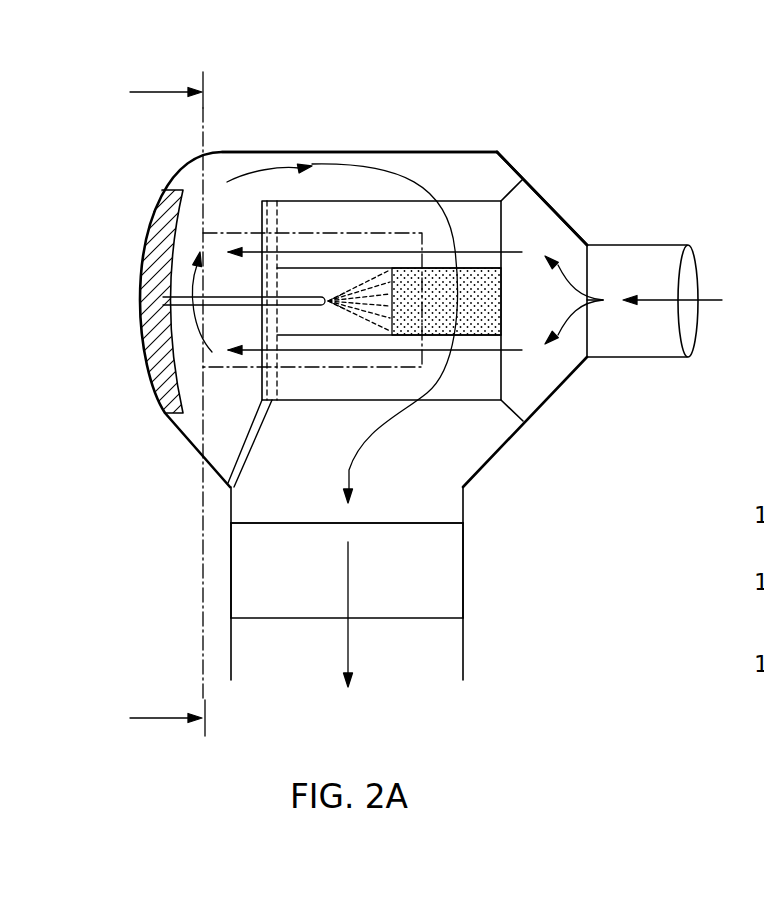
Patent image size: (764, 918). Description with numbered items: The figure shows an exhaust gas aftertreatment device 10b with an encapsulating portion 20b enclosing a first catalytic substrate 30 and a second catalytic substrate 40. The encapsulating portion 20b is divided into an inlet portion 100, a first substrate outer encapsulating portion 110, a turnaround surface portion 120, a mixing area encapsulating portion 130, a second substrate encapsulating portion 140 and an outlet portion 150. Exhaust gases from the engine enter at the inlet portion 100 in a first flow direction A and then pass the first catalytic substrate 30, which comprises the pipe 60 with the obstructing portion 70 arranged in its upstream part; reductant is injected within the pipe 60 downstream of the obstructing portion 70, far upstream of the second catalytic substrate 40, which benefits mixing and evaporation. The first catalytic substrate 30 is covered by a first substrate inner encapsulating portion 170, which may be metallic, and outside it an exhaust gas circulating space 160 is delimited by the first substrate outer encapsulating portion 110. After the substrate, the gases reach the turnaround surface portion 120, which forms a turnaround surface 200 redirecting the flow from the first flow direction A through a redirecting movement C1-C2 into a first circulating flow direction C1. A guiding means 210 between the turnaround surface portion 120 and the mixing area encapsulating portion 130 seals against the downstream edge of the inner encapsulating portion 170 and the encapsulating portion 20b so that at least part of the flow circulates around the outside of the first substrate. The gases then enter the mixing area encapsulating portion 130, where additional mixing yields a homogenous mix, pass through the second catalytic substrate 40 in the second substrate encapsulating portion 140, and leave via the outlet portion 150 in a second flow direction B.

The exhaust gas aftertreatment device 10b is at (630, 206).
The encapsulating portion 20b is at (507, 162).
The first catalytic substrate 30 is at (488, 234).
The second catalytic substrate 40 is at (310, 591).
The pipe 60 is at (315, 291).
The obstructing portion 70 is at (495, 308).
The inlet portion 100 is at (565, 221).
The first substrate outer encapsulating portion 110 is at (395, 151).
The turnaround surface portion 120 is at (155, 273).
The mixing area encapsulating portion 130 is at (231, 507).
The second substrate encapsulating portion 140 is at (231, 575).
The outlet portion 150 is at (231, 652).
The exhaust gas circulating space 160 is at (460, 179).
The first substrate inner encapsulating portion 170 is at (340, 200).
The turnaround surface 200 is at (145, 309).
The guiding means 210 is at (250, 440).
The first flow direction A is at (518, 250).
The second flow direction B is at (352, 637).
The first circulating flow direction C1 is at (210, 225).
The redirecting movement C2 is at (453, 395).